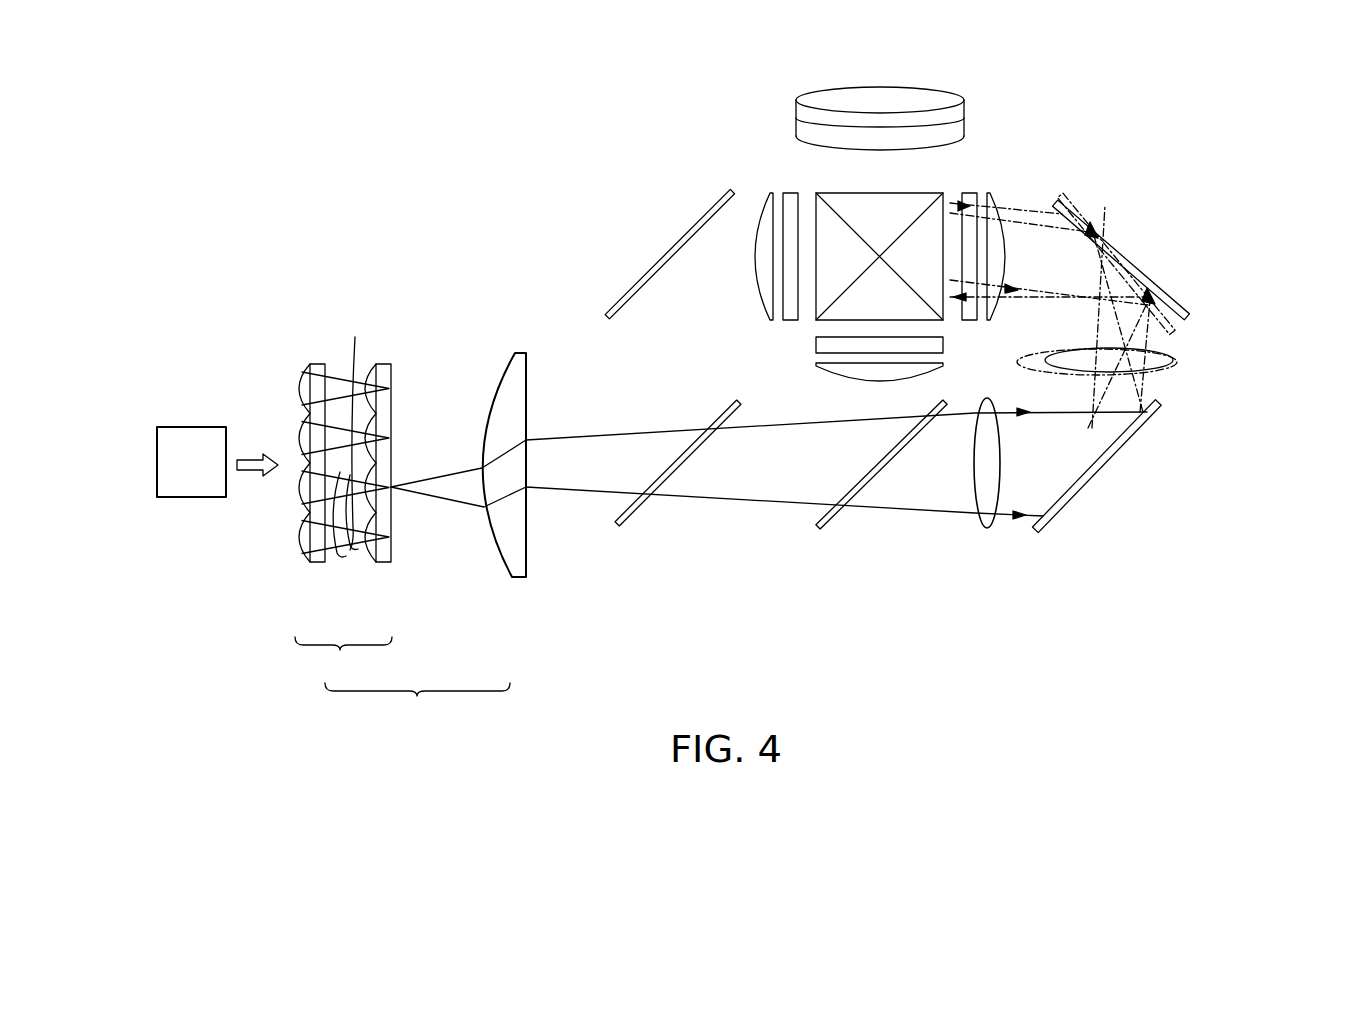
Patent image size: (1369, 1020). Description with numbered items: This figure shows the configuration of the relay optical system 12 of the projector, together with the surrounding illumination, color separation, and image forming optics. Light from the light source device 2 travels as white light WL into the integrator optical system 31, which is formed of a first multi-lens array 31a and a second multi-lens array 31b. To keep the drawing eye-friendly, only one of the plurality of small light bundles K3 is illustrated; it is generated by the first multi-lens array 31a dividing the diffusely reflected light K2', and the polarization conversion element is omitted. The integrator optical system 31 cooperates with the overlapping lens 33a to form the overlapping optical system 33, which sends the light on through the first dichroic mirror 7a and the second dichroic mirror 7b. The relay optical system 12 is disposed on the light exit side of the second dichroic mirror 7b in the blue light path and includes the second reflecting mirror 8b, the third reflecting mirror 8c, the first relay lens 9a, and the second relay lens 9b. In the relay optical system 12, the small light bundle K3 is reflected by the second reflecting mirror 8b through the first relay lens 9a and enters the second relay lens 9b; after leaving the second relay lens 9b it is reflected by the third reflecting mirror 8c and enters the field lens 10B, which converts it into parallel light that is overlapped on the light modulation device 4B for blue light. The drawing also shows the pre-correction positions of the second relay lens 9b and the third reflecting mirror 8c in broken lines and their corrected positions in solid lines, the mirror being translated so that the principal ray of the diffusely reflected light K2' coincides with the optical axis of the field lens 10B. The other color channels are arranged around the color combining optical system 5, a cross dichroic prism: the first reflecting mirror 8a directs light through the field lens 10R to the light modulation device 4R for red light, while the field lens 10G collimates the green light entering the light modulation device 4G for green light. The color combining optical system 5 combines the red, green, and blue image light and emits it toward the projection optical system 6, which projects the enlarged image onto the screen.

The light source device 2 is at (193, 497).
The white light WL is at (251, 457).
The first multi-lens array 31a is at (317, 563).
The second multi-lens array 31b is at (383, 563).
The integrator optical system 31 is at (343, 660).
The overlapping lens 33a is at (497, 540).
The overlapping optical system 33 is at (417, 704).
The small light bundle K3 is at (357, 425).
The diffusely reflected light K2' is at (301, 518).
The first dichroic mirror 7a is at (717, 420).
The second dichroic mirror 7b is at (830, 527).
The first relay lens 9a is at (982, 519).
The second reflecting mirror 8b is at (1120, 450).
The relay optical system 12 is at (1098, 492).
The projection optical system 6 is at (861, 97).
The light modulation device for red light 4R is at (790, 192).
The field lens 10R is at (768, 192).
The color combining optical system 5 is at (900, 202).
The light modulation device for blue light 4B is at (969, 192).
The field lens 10B is at (993, 192).
The first reflecting mirror 8a is at (625, 297).
The light modulation device for green light 4G is at (816, 346).
The field lens 10G is at (816, 368).
The third reflecting mirror 8c is at (1073, 192).
The second relay lens 9b is at (1148, 341).